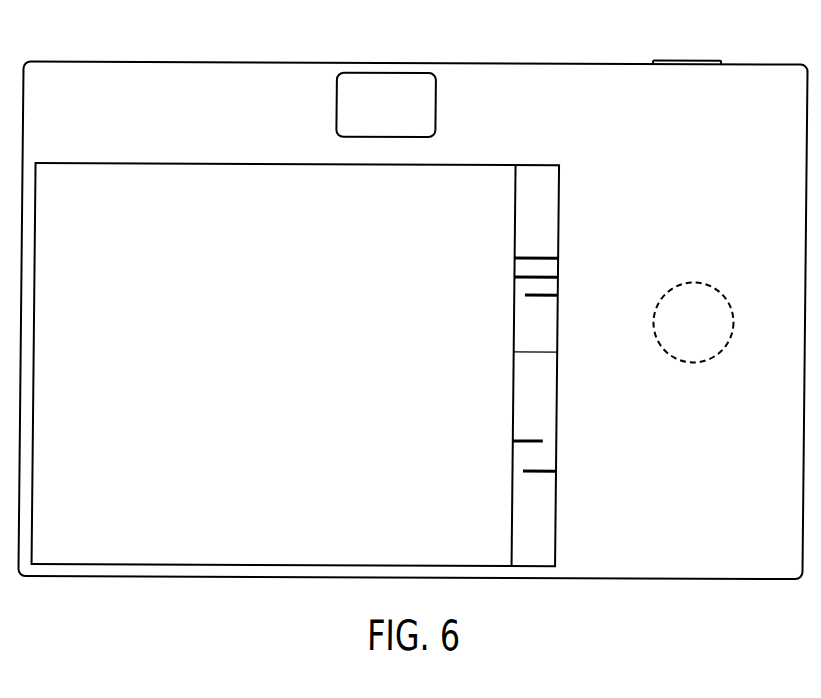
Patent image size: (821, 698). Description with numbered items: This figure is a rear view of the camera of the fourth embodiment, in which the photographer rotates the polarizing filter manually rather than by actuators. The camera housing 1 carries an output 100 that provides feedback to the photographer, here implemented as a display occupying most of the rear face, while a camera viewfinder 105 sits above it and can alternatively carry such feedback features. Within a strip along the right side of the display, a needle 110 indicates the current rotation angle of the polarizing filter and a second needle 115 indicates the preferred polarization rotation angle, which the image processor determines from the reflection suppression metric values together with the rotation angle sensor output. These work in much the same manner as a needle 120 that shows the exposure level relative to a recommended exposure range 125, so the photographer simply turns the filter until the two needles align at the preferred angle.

The camera housing 1 is at (560, 62).
The output 100 is at (182, 566).
The camera viewfinder 105 is at (388, 73).
The needle 110 is at (522, 445).
The second needle 115 is at (544, 473).
The needle 120 is at (543, 296).
The recommended exposure range 125 is at (545, 267).